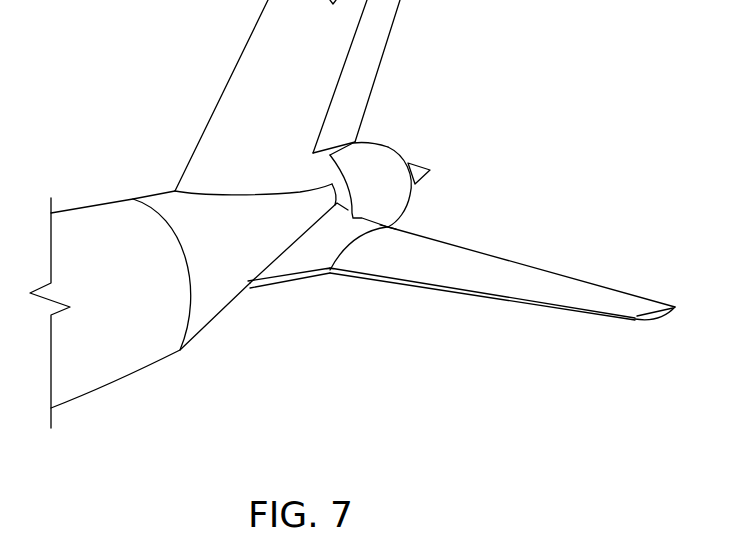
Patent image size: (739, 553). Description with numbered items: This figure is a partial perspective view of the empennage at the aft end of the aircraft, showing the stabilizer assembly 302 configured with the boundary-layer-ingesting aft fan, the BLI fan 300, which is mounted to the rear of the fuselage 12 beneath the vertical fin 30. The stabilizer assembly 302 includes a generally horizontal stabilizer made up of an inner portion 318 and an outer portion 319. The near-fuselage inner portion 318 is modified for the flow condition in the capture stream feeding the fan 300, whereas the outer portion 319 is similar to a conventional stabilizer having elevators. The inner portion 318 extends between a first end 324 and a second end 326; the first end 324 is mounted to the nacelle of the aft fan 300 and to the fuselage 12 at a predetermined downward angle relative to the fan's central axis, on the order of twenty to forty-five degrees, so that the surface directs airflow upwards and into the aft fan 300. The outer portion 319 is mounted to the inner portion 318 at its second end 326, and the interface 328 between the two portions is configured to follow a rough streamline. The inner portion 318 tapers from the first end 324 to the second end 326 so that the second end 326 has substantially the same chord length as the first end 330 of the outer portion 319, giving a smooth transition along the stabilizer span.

The fuselage 12 is at (228, 313).
The vertical stabilizer 30 is at (214, 100).
The BLI fan 300 is at (395, 118).
The stabilizer assembly 302 is at (460, 225).
The inner portion 318 is at (283, 287).
The outer portion 319 is at (523, 293).
The first end 324 is at (284, 240).
The second end 326 is at (318, 266).
The interface 328 is at (366, 264).
The first end 330 is at (373, 229).